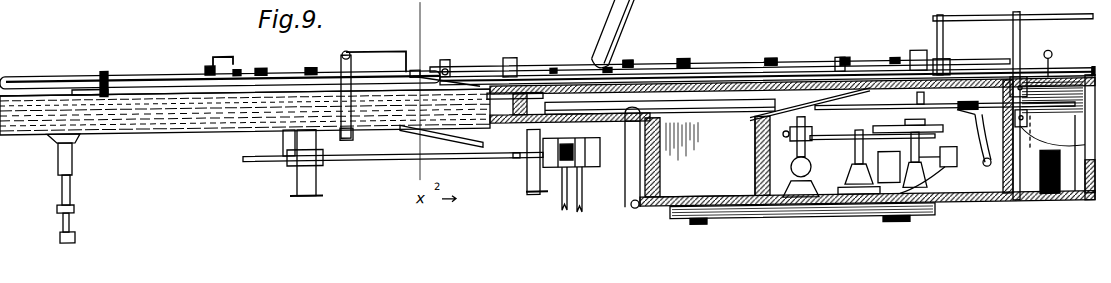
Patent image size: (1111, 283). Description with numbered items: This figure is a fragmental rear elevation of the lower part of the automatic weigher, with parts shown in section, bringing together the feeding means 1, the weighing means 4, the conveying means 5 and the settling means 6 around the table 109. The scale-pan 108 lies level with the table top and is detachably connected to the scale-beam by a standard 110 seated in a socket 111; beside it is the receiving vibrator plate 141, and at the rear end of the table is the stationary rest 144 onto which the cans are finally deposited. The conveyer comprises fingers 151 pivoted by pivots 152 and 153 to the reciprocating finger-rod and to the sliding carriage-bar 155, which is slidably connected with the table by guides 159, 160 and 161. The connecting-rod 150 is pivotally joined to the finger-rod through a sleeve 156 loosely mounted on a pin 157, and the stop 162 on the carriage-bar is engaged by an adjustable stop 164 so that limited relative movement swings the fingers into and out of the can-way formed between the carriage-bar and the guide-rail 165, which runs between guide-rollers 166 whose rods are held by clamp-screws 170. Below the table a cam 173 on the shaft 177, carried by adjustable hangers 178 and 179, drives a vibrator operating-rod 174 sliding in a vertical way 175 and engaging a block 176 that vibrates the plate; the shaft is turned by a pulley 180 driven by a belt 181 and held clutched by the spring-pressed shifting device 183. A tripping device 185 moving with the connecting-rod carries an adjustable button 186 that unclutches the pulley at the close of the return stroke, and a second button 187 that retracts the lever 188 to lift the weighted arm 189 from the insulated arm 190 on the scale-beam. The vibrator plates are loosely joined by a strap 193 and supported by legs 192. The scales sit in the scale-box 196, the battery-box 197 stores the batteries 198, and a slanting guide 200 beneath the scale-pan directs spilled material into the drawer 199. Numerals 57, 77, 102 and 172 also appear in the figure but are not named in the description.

The feeding means 1 is at (740, 30).
The weighing means 4 is at (812, 95).
The conveying means 5 is at (541, 60).
The settling means 6 is at (650, 91).
The support 57 is at (874, 36).
The housing base 77 is at (758, 176).
The bottom plate 102 is at (897, 226).
The scale-pan 108 is at (830, 87).
The table 109 is at (187, 115).
The standard 110 is at (815, 131).
The socket 111 is at (755, 140).
The vibrator plate 141 is at (703, 87).
The stationary rest 144 is at (70, 96).
The connecting-rod 150 is at (557, 68).
The fingers 151 is at (197, 100).
The pivot 152 is at (290, 79).
The pivot 153 is at (617, 72).
The carriage-bar 155 is at (303, 74).
The sleeve 156 is at (463, 74).
The pin 157 is at (457, 94).
The guide 159 is at (963, 113).
The guide 160 is at (348, 60).
The guide 161 is at (107, 73).
The stop 162 is at (200, 88).
The adjustable stop 164 is at (940, 103).
The guide-rail 165 is at (943, 81).
The guide-rollers 166 is at (210, 71).
The clamp-screws 170 is at (240, 71).
The hanger 172 is at (280, 142).
The cam 173 is at (290, 164).
The vibrator operating-rod 174 is at (478, 148).
The vertical way 175 is at (268, 127).
The block 176 is at (487, 100).
The shaft 177 is at (385, 162).
The adjustable hanger 178 is at (295, 190).
The adjustable hanger 179 is at (530, 185).
The pulley 180 is at (583, 191).
The belt 181 is at (629, 202).
The shifting device 183 is at (640, 206).
The tripping device 185 is at (470, 72).
The adjustable button 186 is at (547, 151).
The adjustable button 187 is at (920, 113).
The lever 188 is at (927, 160).
The weighted arm 189 is at (913, 176).
The insulated arm 190 is at (960, 218).
The legs 192 is at (560, 83).
The strap 193 is at (660, 100).
The scale-box 196 is at (870, 112).
The battery-box 197 is at (1052, 69).
The batteries 198 is at (1023, 207).
The drawer 199 is at (707, 156).
The slanting guide 200 is at (768, 89).